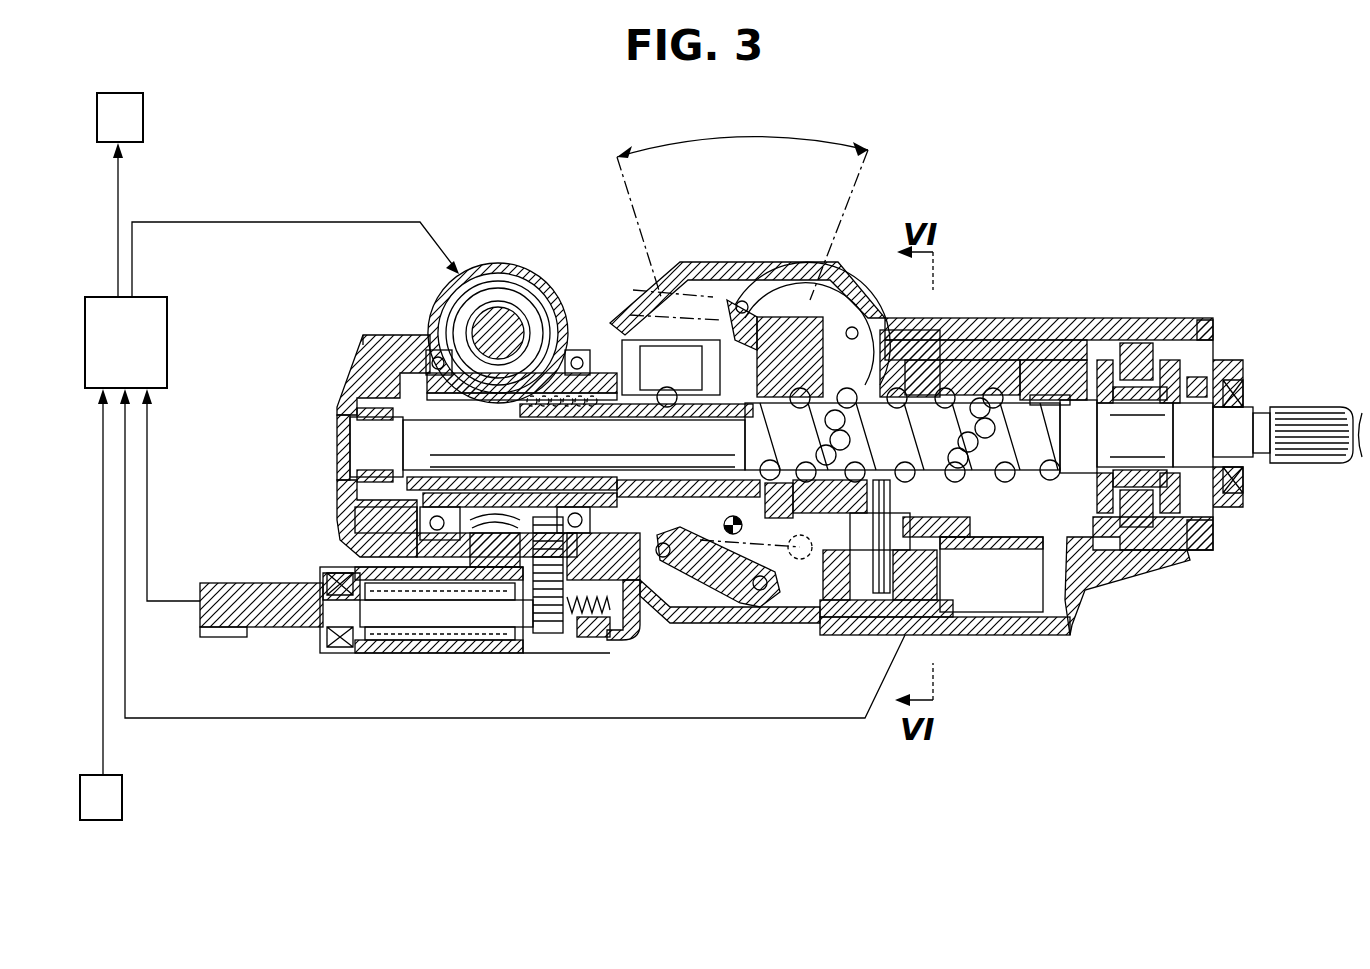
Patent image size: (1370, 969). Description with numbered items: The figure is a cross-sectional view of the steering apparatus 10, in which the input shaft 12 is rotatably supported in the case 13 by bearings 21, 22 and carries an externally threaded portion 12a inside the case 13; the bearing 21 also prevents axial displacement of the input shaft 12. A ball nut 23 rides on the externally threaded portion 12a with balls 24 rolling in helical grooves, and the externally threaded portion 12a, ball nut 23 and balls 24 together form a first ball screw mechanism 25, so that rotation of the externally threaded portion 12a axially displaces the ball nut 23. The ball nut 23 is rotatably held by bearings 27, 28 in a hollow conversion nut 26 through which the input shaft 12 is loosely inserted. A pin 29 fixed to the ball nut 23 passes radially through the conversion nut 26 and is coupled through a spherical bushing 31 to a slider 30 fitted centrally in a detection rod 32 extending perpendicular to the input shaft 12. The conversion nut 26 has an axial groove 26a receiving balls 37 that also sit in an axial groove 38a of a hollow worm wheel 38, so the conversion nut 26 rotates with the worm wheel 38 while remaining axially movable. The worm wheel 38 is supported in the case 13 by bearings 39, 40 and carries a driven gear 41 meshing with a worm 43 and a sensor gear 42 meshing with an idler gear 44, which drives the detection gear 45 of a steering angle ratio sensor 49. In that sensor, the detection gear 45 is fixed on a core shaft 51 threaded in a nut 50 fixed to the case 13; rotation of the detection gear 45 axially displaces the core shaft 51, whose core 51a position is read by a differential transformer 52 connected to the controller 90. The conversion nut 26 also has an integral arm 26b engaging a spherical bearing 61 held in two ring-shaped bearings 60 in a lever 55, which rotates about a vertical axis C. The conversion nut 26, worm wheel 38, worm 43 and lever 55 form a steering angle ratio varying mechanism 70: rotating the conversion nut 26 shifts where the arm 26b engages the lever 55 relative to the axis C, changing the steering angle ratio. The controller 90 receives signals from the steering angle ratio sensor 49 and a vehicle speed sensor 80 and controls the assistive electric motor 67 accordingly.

The steering apparatus 10 is at (1133, 245).
The input shaft 12 is at (1237, 423).
The externally threaded portion 12a is at (945, 472).
The case 13 is at (1190, 553).
The bearing 21 is at (1140, 383).
The bearing 22 is at (337, 468).
The ball nut 23 is at (997, 345).
The balls 24 is at (995, 465).
The first ball screw mechanism 25 is at (1030, 520).
The conversion nut 26 is at (980, 357).
The axial groove 26a is at (668, 397).
The arm 26b is at (780, 330).
The bearing 27 is at (1063, 360).
The bearing 28 is at (895, 343).
The pin 29 is at (873, 595).
The slider 30 is at (927, 617).
The spherical bushing 31 is at (827, 617).
The detection rod 32 is at (1013, 617).
The balls 37 is at (598, 355).
The worm wheel 38 is at (475, 555).
The axial groove 38a is at (405, 375).
The bearing 39 is at (585, 365).
The bearing 40 is at (452, 395).
The driven gear 41 is at (478, 600).
The sensor gear 42 is at (533, 282).
The worm 43 is at (498, 303).
The idler gear 44 is at (627, 593).
The detection gear 45 is at (548, 615).
The steering angle ratio sensor 49 is at (310, 650).
The nut 50 is at (600, 615).
The core shaft 51 is at (505, 540).
The core 51a is at (357, 540).
The differential transformer 52 is at (383, 628).
The lever 55 is at (680, 300).
The ring-shaped bearings 60 is at (740, 300).
The spherical bearing 61 is at (848, 290).
The electric motor 67 is at (143, 118).
The steering angle ratio varying mechanism 70 is at (703, 652).
The vehicle speed sensor 80 is at (122, 800).
The controller 90 is at (157, 323).
The vertical axis C is at (717, 524).